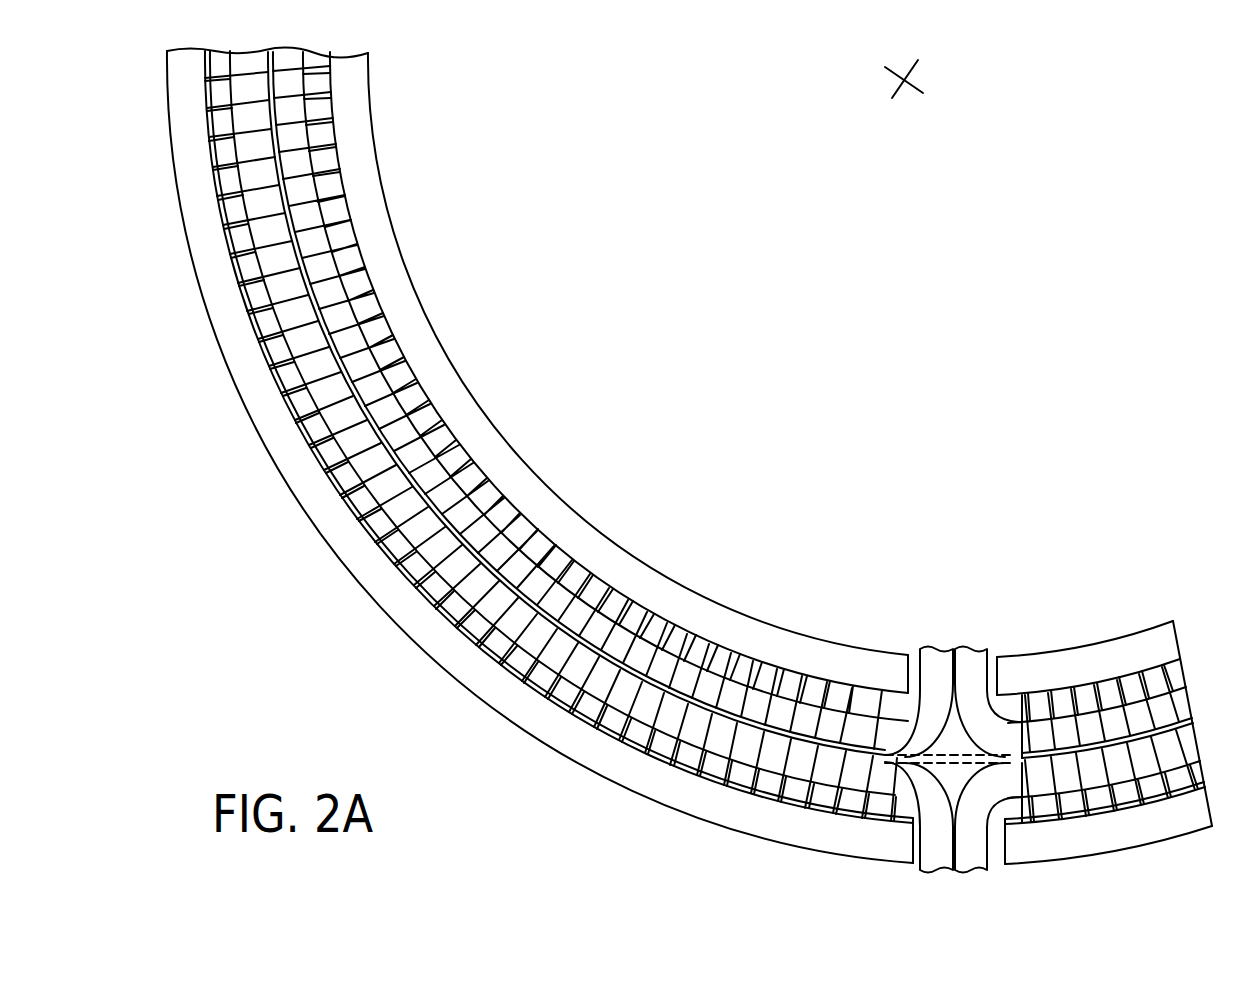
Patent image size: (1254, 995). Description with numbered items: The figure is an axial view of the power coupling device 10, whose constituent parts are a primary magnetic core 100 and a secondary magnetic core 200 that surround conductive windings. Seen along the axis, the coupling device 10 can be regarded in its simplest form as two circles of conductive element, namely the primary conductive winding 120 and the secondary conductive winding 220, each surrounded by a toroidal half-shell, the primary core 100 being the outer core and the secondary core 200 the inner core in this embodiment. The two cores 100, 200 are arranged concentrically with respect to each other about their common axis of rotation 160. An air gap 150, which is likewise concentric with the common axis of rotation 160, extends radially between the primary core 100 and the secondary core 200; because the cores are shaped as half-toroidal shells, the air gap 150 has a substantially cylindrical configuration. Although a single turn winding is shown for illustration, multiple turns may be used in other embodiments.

The power coupling device 10 is at (920, 900).
The primary magnetic core 100 is at (647, 743).
The primary conductive winding 120 is at (930, 802).
The air gap 150 is at (548, 535).
The common axis of rotation 160 is at (903, 80).
The secondary magnetic core 200 is at (643, 653).
The secondary conductive winding 220 is at (893, 733).